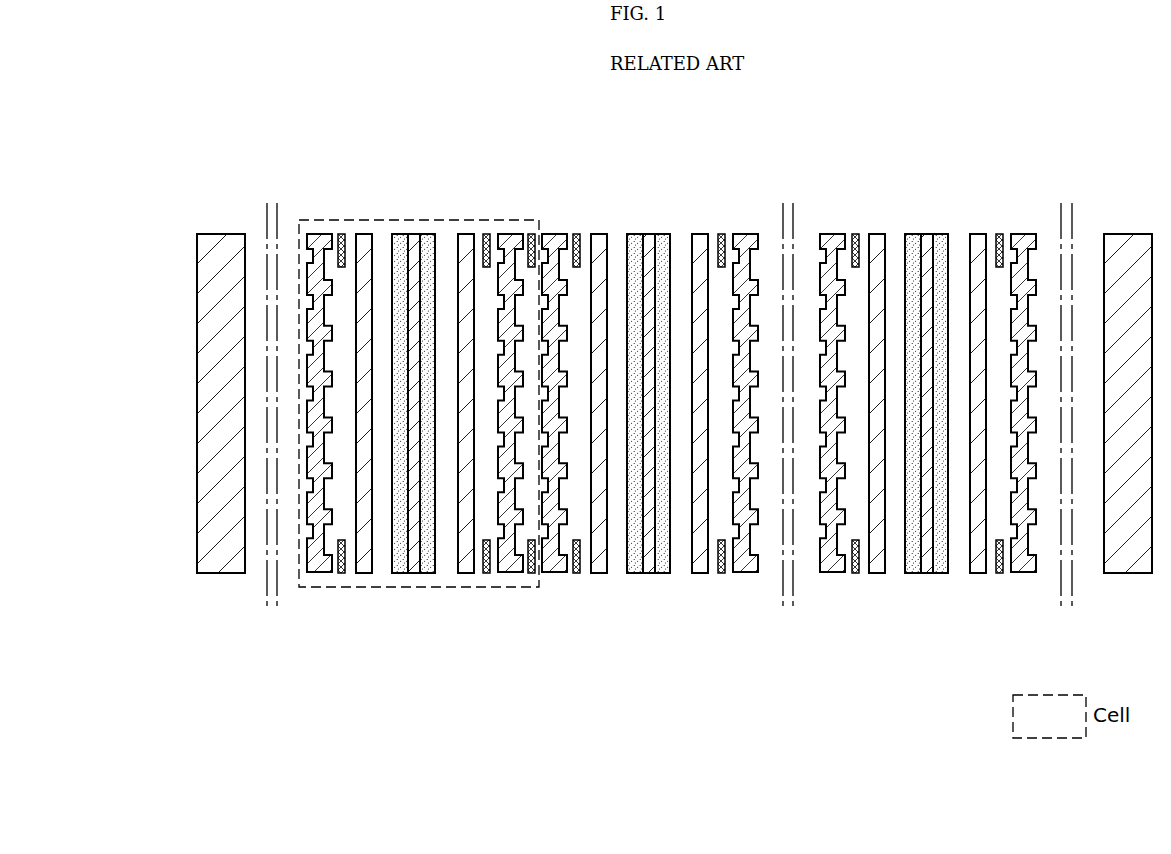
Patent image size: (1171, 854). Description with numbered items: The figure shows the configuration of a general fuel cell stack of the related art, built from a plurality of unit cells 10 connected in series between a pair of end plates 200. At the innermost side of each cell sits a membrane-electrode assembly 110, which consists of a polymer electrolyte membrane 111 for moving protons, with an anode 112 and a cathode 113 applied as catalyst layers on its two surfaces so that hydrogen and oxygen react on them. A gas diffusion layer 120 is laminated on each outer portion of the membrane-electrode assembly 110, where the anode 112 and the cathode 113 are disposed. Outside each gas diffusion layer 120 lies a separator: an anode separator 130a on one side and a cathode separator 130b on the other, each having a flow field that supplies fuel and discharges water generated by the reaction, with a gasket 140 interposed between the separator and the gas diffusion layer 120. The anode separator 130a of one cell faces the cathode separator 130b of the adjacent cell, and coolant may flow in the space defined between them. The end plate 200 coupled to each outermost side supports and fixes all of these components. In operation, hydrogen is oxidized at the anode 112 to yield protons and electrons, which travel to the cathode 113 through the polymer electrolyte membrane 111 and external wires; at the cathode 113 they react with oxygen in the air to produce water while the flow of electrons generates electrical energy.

The unit cell 10 is at (655, 463).
The membrane-electrode assembly 110 is at (651, 478).
The polymer electrolyte membrane 111 is at (414, 575).
The anode 112 is at (430, 575).
The cathode 113 is at (401, 575).
The gas diffusion layer 120 is at (364, 573).
The anode separator 130a is at (318, 573).
The cathode separator 130b is at (510, 573).
The gasket 140 is at (341, 234).
The end plate 200 is at (221, 573).